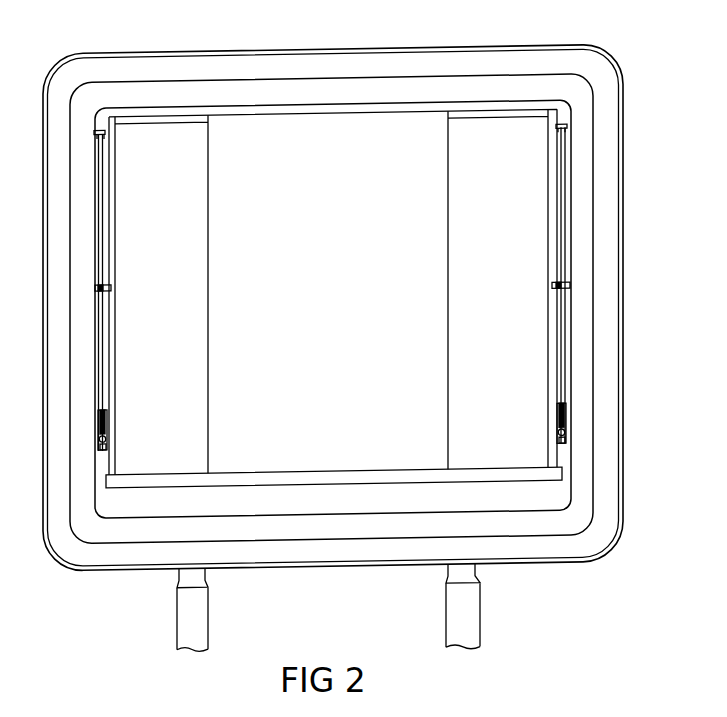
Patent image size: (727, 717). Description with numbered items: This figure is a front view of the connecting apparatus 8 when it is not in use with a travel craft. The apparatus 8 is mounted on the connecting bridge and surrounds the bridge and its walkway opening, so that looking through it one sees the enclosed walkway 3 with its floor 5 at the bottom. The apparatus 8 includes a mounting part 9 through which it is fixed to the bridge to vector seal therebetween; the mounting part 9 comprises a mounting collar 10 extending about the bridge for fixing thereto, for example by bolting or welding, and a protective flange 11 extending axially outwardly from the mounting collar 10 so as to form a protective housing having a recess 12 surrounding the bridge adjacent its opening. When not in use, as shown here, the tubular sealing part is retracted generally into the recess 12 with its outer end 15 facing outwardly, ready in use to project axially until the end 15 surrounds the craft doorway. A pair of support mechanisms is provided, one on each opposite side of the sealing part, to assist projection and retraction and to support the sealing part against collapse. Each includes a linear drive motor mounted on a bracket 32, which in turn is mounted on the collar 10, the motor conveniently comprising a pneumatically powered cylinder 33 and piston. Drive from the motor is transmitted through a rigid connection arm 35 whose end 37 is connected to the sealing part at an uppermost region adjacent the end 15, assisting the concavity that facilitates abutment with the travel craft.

The walkway 3 is at (256, 136).
The floor 5 is at (334, 477).
The apparatus 8 is at (614, 232).
The mounting part 9 is at (623, 300).
The mounting collar 10 is at (605, 382).
The protective flange 11 is at (623, 430).
The recess 12 is at (607, 519).
The end of sealing part 15 is at (582, 494).
The bracket 32 is at (102, 423).
The pneumatically powered cylinder 33 is at (108, 448).
The rigid connection arm 35 is at (103, 354).
The end of connection arm 37 is at (102, 148).